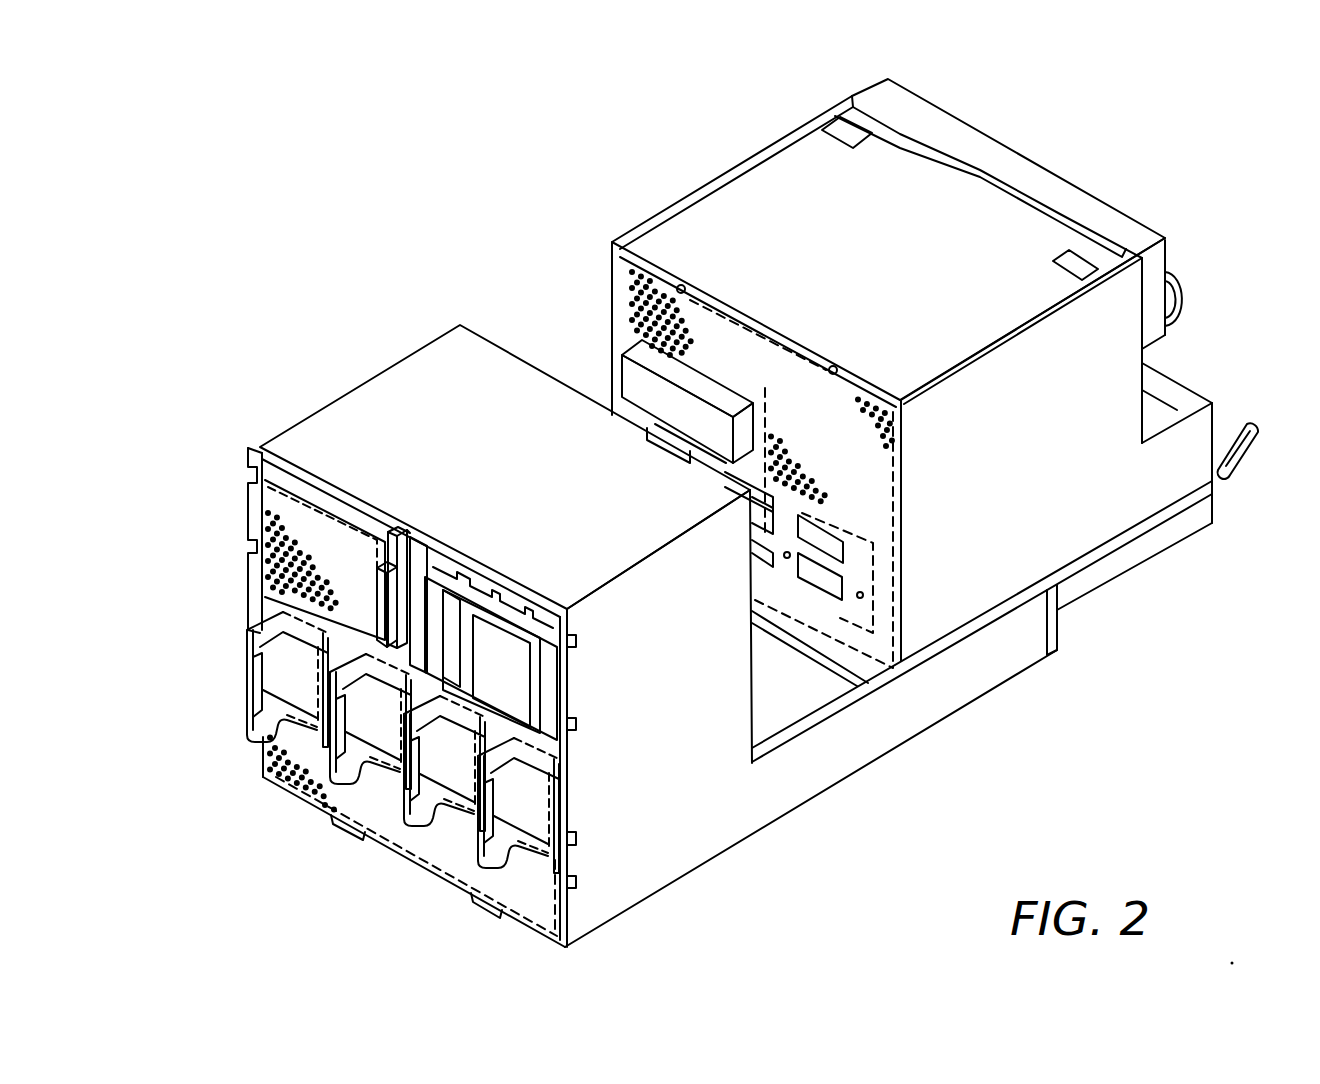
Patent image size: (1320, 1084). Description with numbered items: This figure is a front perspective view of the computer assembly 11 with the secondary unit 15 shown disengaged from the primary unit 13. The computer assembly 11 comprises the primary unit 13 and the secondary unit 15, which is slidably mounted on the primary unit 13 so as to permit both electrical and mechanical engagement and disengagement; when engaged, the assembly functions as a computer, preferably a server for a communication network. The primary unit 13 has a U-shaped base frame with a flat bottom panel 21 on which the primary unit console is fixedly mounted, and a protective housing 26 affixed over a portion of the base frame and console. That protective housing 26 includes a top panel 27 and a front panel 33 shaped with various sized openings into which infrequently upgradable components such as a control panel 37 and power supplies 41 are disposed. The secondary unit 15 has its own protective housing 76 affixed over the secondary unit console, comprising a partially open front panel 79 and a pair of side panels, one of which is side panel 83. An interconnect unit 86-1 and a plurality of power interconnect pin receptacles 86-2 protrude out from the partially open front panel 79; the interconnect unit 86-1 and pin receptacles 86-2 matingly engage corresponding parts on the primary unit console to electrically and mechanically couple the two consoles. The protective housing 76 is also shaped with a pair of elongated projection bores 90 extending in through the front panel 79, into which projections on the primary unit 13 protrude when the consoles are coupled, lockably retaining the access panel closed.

The computer assembly 11 is at (716, 513).
The primary unit 13 is at (595, 615).
The secondary unit 15 is at (893, 451).
The flat bottom panel 21 is at (793, 706).
The protective housing 26 is at (666, 830).
The top panel 27 is at (328, 447).
The front panel 33 is at (293, 788).
The control panel 37 is at (268, 567).
The power supplies 41 is at (226, 725).
The protective housing 76 is at (997, 565).
The partially open front panel 79 is at (622, 291).
The side panel 83 is at (1017, 490).
The interconnect unit 86-1 is at (633, 382).
The power interconnect pin receptacles 86-2 is at (1033, 391).
The elongated projection bores 90 is at (835, 367).